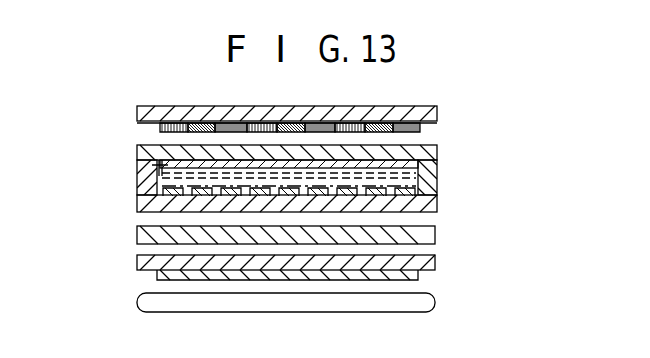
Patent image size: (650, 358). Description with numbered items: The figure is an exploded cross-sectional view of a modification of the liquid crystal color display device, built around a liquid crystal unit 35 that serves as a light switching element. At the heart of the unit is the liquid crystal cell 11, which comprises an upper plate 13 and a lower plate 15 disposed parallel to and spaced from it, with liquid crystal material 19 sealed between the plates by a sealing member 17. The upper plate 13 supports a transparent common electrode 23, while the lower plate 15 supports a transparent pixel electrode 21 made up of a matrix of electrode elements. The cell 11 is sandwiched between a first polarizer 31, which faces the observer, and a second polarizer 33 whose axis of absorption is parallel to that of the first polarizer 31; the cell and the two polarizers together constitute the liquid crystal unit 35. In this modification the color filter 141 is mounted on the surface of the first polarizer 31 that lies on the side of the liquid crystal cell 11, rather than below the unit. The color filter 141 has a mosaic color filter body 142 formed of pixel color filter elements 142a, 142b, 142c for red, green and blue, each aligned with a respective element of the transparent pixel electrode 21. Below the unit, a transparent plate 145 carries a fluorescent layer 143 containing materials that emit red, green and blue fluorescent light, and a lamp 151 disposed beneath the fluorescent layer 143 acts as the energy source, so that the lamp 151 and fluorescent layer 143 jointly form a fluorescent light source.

The liquid crystal unit 35 is at (527, 92).
The first polarizer 31 is at (436, 112).
The color filter 141 is at (437, 124).
The mosaic color filter body 142 is at (76, 97).
The pixel color filter element 142a is at (158, 124).
The pixel color filter element 142b is at (214, 133).
The pixel color filter element 142c is at (250, 133).
The liquid crystal cell 11 is at (488, 142).
The upper plate 13 is at (437, 151).
The sealing member 17 is at (150, 192).
The transparent common electrode 23 is at (156, 168).
The liquid crystal material 19 is at (416, 183).
The transparent pixel electrode 21 is at (172, 198).
The lower plate 15 is at (437, 208).
The second polarizer 33 is at (435, 236).
The transparent plate 145 is at (435, 263).
The fluorescent layer 143 is at (418, 276).
The lamp 151 is at (436, 306).